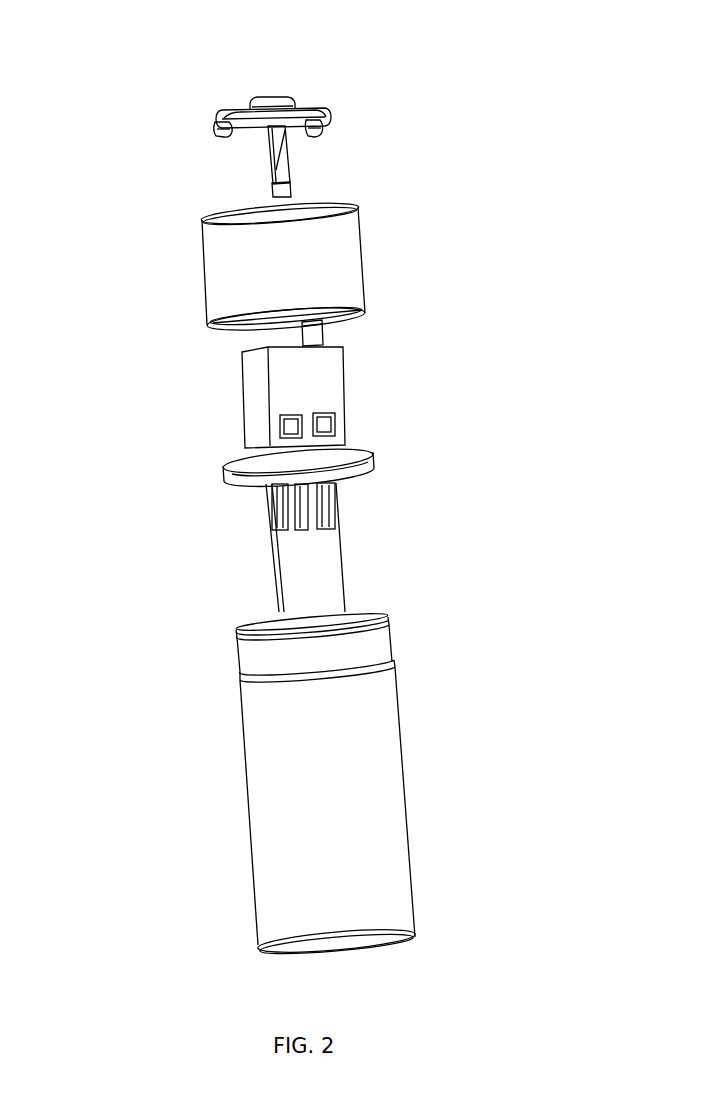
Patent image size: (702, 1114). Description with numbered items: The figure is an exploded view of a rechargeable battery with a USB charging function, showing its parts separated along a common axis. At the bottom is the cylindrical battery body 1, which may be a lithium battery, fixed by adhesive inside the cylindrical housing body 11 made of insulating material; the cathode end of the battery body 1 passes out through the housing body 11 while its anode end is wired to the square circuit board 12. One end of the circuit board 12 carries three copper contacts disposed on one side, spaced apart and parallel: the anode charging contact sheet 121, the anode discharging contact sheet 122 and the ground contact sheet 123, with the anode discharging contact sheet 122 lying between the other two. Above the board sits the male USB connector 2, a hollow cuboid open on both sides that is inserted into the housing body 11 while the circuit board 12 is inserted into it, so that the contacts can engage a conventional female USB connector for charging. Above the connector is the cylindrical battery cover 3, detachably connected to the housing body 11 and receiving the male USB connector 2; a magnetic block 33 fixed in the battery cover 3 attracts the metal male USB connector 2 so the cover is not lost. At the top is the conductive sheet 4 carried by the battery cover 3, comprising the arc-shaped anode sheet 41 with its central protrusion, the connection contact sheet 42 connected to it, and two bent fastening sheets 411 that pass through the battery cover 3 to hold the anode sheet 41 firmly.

The battery body 1 is at (357, 647).
The housing body 11 is at (350, 803).
The circuit board 12 is at (303, 580).
The anode charging contact sheet 121 is at (268, 510).
The anode discharging contact sheet 122 is at (300, 500).
The ground contact sheet 123 is at (323, 507).
The male USB connector 2 is at (325, 398).
The battery cover 3 is at (242, 293).
The magnetic block 33 is at (313, 325).
The conductive sheet 4 is at (368, 50).
The anode sheet 41 is at (268, 98).
The fastening sheet 411 is at (225, 113).
The connection contact sheet 42 is at (282, 158).